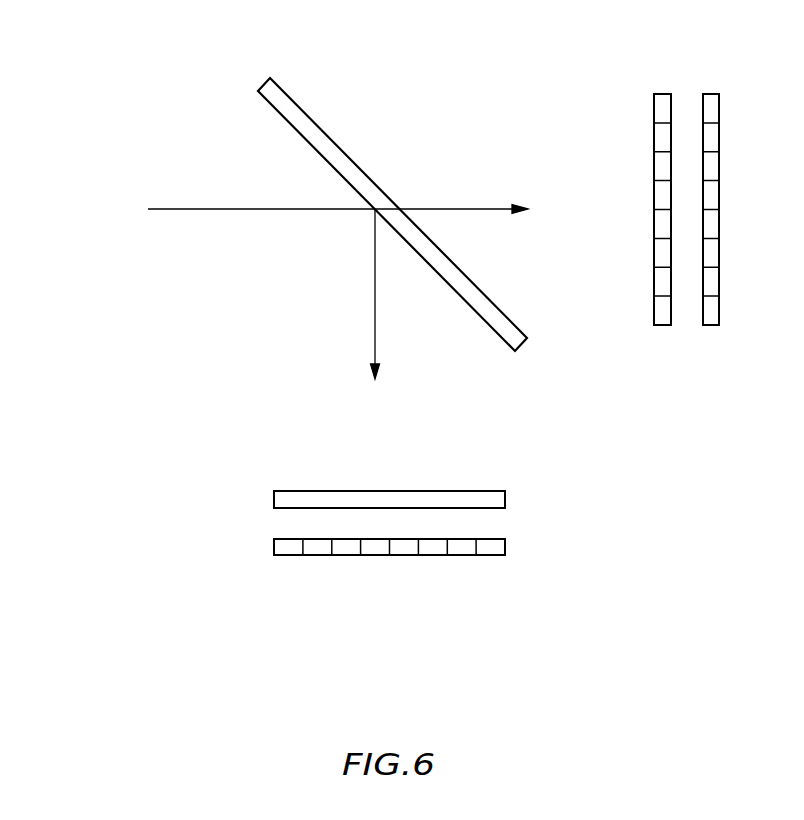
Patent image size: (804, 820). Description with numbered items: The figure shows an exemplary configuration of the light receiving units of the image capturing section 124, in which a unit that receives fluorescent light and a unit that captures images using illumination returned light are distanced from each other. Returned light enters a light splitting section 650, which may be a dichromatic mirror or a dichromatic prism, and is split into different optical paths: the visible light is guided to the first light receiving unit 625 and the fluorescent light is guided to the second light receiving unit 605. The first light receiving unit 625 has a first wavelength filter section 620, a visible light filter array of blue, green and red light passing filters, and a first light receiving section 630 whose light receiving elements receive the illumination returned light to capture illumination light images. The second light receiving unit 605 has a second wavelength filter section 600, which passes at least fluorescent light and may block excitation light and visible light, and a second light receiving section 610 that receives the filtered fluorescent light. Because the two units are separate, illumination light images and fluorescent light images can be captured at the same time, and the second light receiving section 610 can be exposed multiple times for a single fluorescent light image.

The image capturing section 124 is at (410, 665).
The second wavelength filter section 600 is at (505, 500).
The second light receiving unit 605 is at (575, 492).
The second light receiving section 610 is at (505, 547).
The first wavelength filter section 620 is at (663, 93).
The first light receiving unit 625 is at (778, 65).
The first light receiving section 630 is at (711, 93).
The light splitting section 650 is at (262, 86).